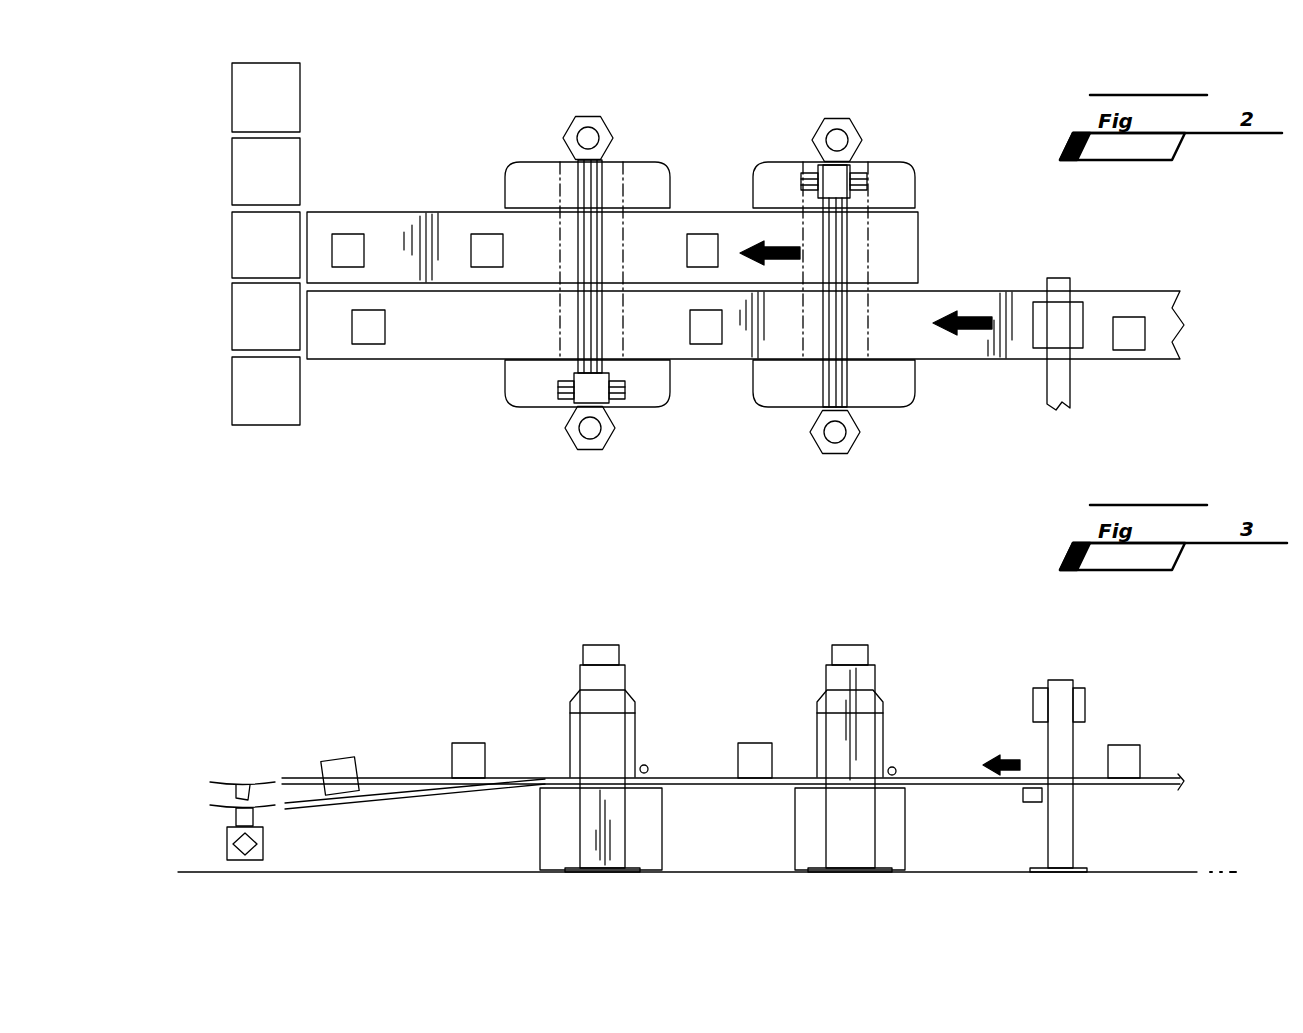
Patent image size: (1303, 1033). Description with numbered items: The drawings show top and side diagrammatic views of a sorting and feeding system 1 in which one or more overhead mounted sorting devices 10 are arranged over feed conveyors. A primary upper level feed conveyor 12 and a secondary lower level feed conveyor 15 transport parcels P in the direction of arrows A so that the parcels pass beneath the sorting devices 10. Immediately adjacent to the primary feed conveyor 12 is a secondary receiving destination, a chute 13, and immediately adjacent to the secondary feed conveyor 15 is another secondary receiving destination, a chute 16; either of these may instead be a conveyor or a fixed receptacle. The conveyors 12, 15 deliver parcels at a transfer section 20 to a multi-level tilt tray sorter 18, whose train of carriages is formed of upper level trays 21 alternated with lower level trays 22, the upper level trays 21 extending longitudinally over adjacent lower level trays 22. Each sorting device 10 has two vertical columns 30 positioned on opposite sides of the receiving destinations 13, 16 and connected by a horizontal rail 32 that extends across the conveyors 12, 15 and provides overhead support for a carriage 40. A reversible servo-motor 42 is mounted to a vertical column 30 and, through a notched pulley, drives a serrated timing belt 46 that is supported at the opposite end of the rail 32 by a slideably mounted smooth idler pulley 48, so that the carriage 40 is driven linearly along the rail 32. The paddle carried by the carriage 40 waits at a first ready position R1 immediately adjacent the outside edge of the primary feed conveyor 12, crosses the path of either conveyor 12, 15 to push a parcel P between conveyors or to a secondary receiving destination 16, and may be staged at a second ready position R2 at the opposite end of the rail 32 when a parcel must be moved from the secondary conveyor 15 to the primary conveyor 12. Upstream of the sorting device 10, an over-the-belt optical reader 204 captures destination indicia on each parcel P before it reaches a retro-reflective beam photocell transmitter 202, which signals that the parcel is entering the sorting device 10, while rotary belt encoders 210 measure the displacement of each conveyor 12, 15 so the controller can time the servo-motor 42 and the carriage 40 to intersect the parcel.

In FIG. 2, the sorting and feeding system 1 is at (952, 457).
In FIG. 2, the sorting device 10 is at (713, 318).
In FIG. 3, the sorting device 10 is at (734, 736).
In FIG. 2, the primary upper level feed conveyor 12 is at (1158, 300).
In FIG. 3, the primary upper level feed conveyor 12 is at (376, 793).
In FIG. 2, the chute 13 is at (530, 392).
In FIG. 3, the chute 13 is at (655, 808).
In FIG. 2, the secondary lower level feed conveyor 15 is at (905, 250).
In FIG. 3, the secondary lower level feed conveyor 15 is at (380, 796).
In FIG. 2, the chute 16 is at (520, 182).
In FIG. 3, the chute 16 is at (726, 733).
In FIG. 2, the multi-level tilt tray sorter 18 is at (228, 244).
In FIG. 3, the multi-level tilt tray sorter 18 is at (207, 769).
In FIG. 2, the transfer section 20 is at (763, 323).
In FIG. 3, the transfer section 20 is at (731, 759).
In FIG. 2, the upper level tray 21 is at (266, 171).
In FIG. 3, the upper level tray 21 is at (216, 781).
In FIG. 2, the lower level tray 22 is at (266, 97).
In FIG. 3, the lower level tray 22 is at (212, 806).
In FIG. 2, the vertical column 30 is at (603, 158).
In FIG. 3, the vertical column 30 is at (618, 834).
In FIG. 2, the horizontal rail 32 is at (835, 386).
In FIG. 2, the carriage 40 is at (598, 392).
In FIG. 2, the reversible servo-motor 42 is at (585, 437).
In FIG. 3, the reversible servo-motor 42 is at (600, 645).
In FIG. 2, the serrated timing belt 46 is at (900, 325).
In FIG. 2, the smooth idler pulley 48 is at (590, 138).
In FIG. 3, the beam photocell transmitter 202 is at (650, 767).
In FIG. 2, the over-the-belt optical reader 204 is at (1082, 320).
In FIG. 3, the over-the-belt optical reader 204 is at (1088, 706).
In FIG. 3, the rotary belt encoder 210 is at (1034, 804).
In FIG. 2, the first ready position R1 is at (630, 385).
In FIG. 2, the second ready position R2 is at (792, 181).
In FIG. 2, the direction of conveyor travel A is at (862, 279).
In FIG. 3, the direction of conveyor travel A is at (989, 769).
In FIG. 2, the parcel P is at (1128, 346).
In FIG. 3, the parcel P is at (485, 742).